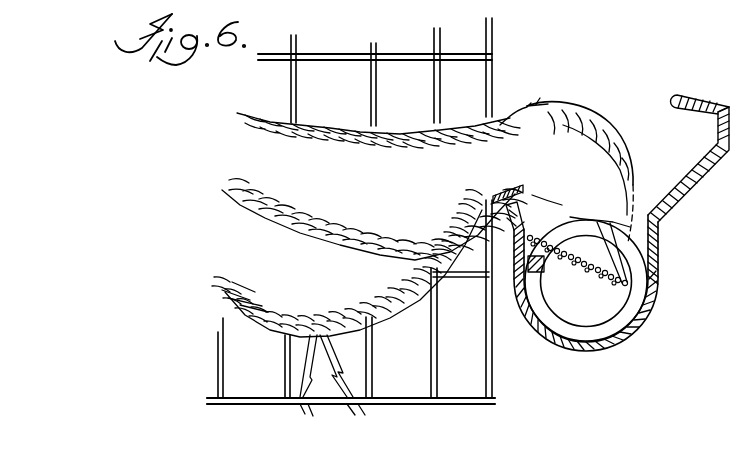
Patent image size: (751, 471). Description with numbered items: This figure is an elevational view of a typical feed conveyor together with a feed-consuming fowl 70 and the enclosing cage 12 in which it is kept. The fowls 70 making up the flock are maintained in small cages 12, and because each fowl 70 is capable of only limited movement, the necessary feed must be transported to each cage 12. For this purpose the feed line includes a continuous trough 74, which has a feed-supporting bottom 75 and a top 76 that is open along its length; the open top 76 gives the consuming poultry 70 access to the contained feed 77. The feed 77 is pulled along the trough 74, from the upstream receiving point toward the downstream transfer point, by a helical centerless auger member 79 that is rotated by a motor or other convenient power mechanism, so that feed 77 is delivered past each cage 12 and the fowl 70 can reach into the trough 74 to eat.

The cage 12 is at (497, 58).
The fowl 70 is at (378, 198).
The continuous trough 74 is at (656, 240).
The feed-supporting bottom 75 is at (636, 308).
The top 76 is at (647, 162).
The feed 77 is at (598, 312).
The helical centerless auger member 79 is at (560, 328).